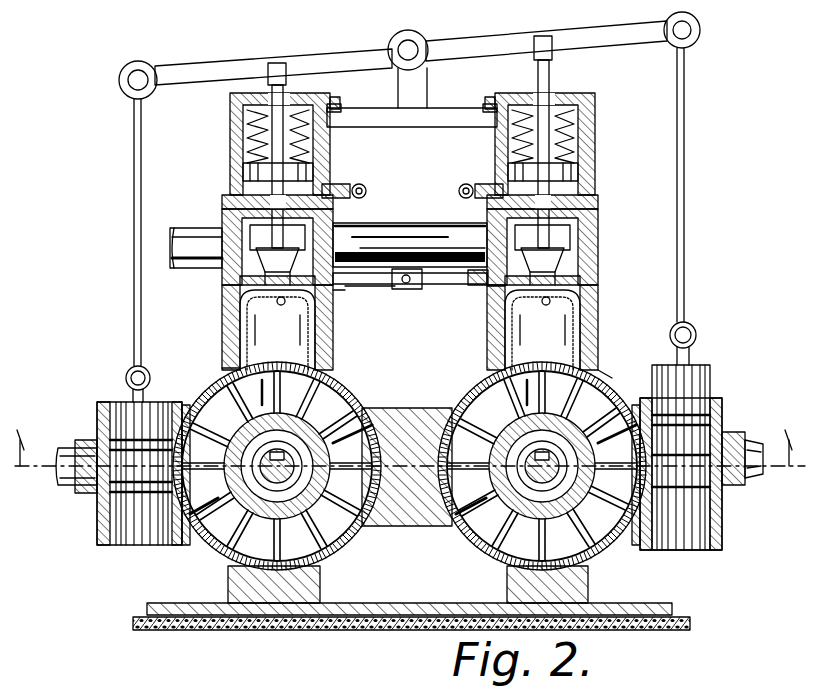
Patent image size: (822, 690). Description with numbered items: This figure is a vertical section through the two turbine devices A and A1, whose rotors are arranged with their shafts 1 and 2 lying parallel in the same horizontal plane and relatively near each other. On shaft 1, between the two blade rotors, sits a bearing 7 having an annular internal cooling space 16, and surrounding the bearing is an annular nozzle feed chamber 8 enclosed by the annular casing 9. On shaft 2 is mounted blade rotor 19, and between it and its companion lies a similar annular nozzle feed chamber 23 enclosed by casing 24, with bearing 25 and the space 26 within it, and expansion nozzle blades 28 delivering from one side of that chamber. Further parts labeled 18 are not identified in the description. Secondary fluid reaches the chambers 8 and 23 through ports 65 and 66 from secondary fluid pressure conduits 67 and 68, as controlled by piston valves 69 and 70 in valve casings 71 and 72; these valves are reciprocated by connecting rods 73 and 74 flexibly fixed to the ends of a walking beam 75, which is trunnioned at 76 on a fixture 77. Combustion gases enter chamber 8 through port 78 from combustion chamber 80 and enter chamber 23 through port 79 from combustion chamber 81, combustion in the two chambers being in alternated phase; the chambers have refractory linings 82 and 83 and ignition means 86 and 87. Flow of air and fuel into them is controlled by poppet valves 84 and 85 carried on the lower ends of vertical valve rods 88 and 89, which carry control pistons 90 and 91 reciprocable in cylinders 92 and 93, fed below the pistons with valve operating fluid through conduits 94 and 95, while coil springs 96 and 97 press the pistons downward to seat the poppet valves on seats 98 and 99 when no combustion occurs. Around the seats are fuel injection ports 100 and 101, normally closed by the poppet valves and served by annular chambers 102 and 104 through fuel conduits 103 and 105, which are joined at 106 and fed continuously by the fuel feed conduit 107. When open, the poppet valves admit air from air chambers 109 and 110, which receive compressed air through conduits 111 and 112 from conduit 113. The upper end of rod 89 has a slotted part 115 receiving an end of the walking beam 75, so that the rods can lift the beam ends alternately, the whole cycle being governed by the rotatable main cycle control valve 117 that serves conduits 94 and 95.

The shaft 1 is at (290, 468).
The shaft 2 is at (556, 458).
The bearing 7 is at (262, 520).
The annular nozzle feed chamber 8 is at (346, 420).
The annular casing 9 is at (343, 546).
The cooling space 16 is at (291, 496).
The vane 18 is at (209, 436).
The blade rotor 19 is at (411, 475).
The annular nozzle feed chamber 23 is at (494, 400).
The casing 24 is at (607, 549).
The bearing 25 is at (520, 524).
The space 26 is at (510, 476).
The expansion nozzle blades 28 is at (481, 436).
The port 65 is at (219, 466).
The port 66 is at (640, 470).
The secondary fluid pressure conduit 67 is at (70, 449).
The secondary fluid pressure conduit 68 is at (757, 440).
The piston valve 69 is at (128, 406).
The piston valve 70 is at (712, 386).
The valve casing 71 is at (100, 548).
The valve casing 72 is at (722, 550).
The connecting rod 73 is at (134, 293).
The connecting rod 74 is at (685, 268).
The walking beam 75 is at (215, 73).
The trunnion 76 is at (414, 42).
The fixture 77 is at (428, 92).
The port 78 is at (290, 375).
The port 79 is at (548, 376).
The combustion chamber 80 is at (331, 346).
The combustion chamber 81 is at (590, 322).
The refractory lining 82 is at (314, 346).
The refractory lining 83 is at (525, 346).
The poppet valve 84 is at (285, 303).
The poppet valve 85 is at (570, 246).
The ignition means 86 is at (272, 310).
The ignition means 87 is at (549, 304).
The valve rod 88 is at (245, 203).
The valve rod 89 is at (572, 186).
The control piston 90 is at (258, 172).
The control piston 91 is at (580, 160).
The cylinder 92 is at (230, 124).
The cylinder 93 is at (584, 126).
The conduit 94 is at (358, 184).
The conduit 95 is at (468, 184).
The coil spring 96 is at (292, 144).
The coil spring 97 is at (580, 112).
The valve seat 98 is at (231, 276).
The valve seat 99 is at (597, 276).
The fuel injection ports 100 is at (334, 300).
The fuel injection ports 101 is at (596, 286).
The annular chamber 102 is at (236, 286).
The fuel conduit 103 is at (380, 290).
The annular chamber 104 is at (490, 300).
The fuel conduit 105 is at (470, 284).
The junction 106 is at (415, 289).
The fuel feed conduit 107 is at (405, 292).
The air chamber 109 is at (341, 233).
The air chamber 110 is at (580, 221).
The conduit 111 is at (244, 226).
The conduit 112 is at (600, 233).
The conduit 113 is at (178, 248).
The slotted part 115 is at (545, 36).
The main cycle control valve 117 is at (281, 63).
The turbine device A is at (218, 368).
The turbine device A1 is at (603, 376).